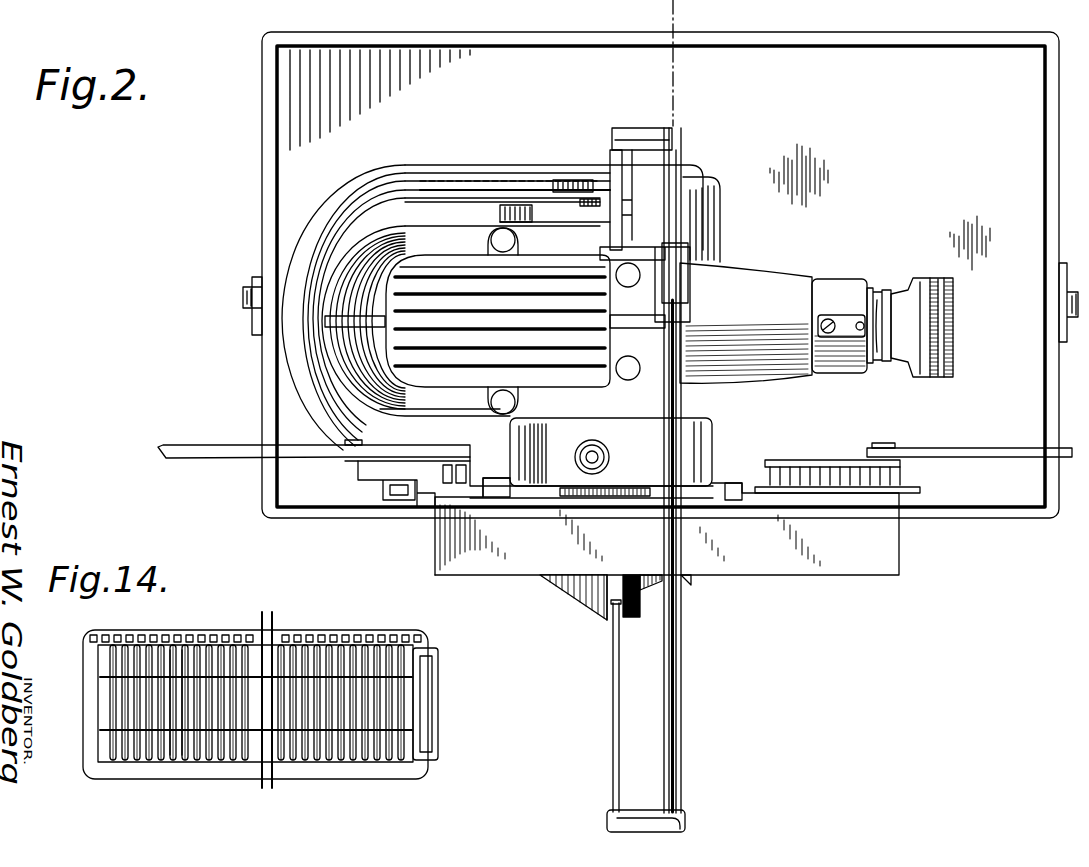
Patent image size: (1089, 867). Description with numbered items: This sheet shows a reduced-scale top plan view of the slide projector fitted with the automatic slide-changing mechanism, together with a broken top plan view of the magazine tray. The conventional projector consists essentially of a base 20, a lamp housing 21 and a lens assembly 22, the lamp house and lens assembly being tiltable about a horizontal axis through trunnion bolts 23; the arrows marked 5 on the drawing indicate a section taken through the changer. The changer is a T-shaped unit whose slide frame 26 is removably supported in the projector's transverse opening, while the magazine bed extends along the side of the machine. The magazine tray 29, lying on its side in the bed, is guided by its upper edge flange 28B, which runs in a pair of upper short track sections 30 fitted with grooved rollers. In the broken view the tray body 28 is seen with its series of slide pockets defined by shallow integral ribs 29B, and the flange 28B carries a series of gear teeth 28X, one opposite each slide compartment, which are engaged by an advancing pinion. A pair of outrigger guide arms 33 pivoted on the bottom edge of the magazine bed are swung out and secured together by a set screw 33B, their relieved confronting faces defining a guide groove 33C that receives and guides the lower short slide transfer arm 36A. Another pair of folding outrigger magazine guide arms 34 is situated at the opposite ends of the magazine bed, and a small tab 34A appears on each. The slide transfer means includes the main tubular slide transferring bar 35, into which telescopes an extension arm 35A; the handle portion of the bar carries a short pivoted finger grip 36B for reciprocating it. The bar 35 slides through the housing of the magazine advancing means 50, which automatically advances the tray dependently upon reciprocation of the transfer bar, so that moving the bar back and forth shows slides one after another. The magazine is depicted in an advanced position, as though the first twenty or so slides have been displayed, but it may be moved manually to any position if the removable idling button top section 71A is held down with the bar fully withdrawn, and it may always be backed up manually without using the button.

In FIG. 2, the section line 5- 5 is at (652, 93).
In FIG. 2, the base 20 is at (520, 172).
In FIG. 2, the lamp housing 21 is at (462, 222).
In FIG. 2, the lens assembly 22 is at (815, 275).
In FIG. 2, the trunnion bolts 23 is at (588, 160).
In FIG. 2, the slide frame 26 is at (610, 140).
In FIG. 14, the slide carrier plate 28 is at (390, 780).
In FIG. 2, the upper edge flange 28B is at (875, 495).
In FIG. 14, the upper edge flange 28B is at (352, 633).
In FIG. 14, the gear teeth 28X is at (215, 633).
In FIG. 2, the magazine tray 29 is at (624, 539).
In FIG. 14, the magazine tray 29 is at (442, 742).
In FIG. 14, the ribs 29B is at (198, 735).
In FIG. 2, the upper short track sections 30 is at (530, 497).
In FIG. 2, the outrigger guide arms 33 is at (570, 588).
In FIG. 2, the set screw 33B is at (640, 612).
In FIG. 2, the guide groove 33C is at (603, 625).
In FIG. 2, the folding outrigger magazine guide arms 34 is at (232, 457).
In FIG. 2, the shelf tabs 34A is at (340, 458).
In FIG. 2, the slide transferring bar 35 is at (682, 700).
In FIG. 2, the extension arm 35A is at (670, 290).
In FIG. 2, the slide transfer arm 36A is at (611, 695).
In FIG. 2, the finger grip 36B is at (635, 800).
In FIG. 2, the magazine advancing means 50 is at (700, 447).
In FIG. 2, the idling button top section 71A is at (598, 452).